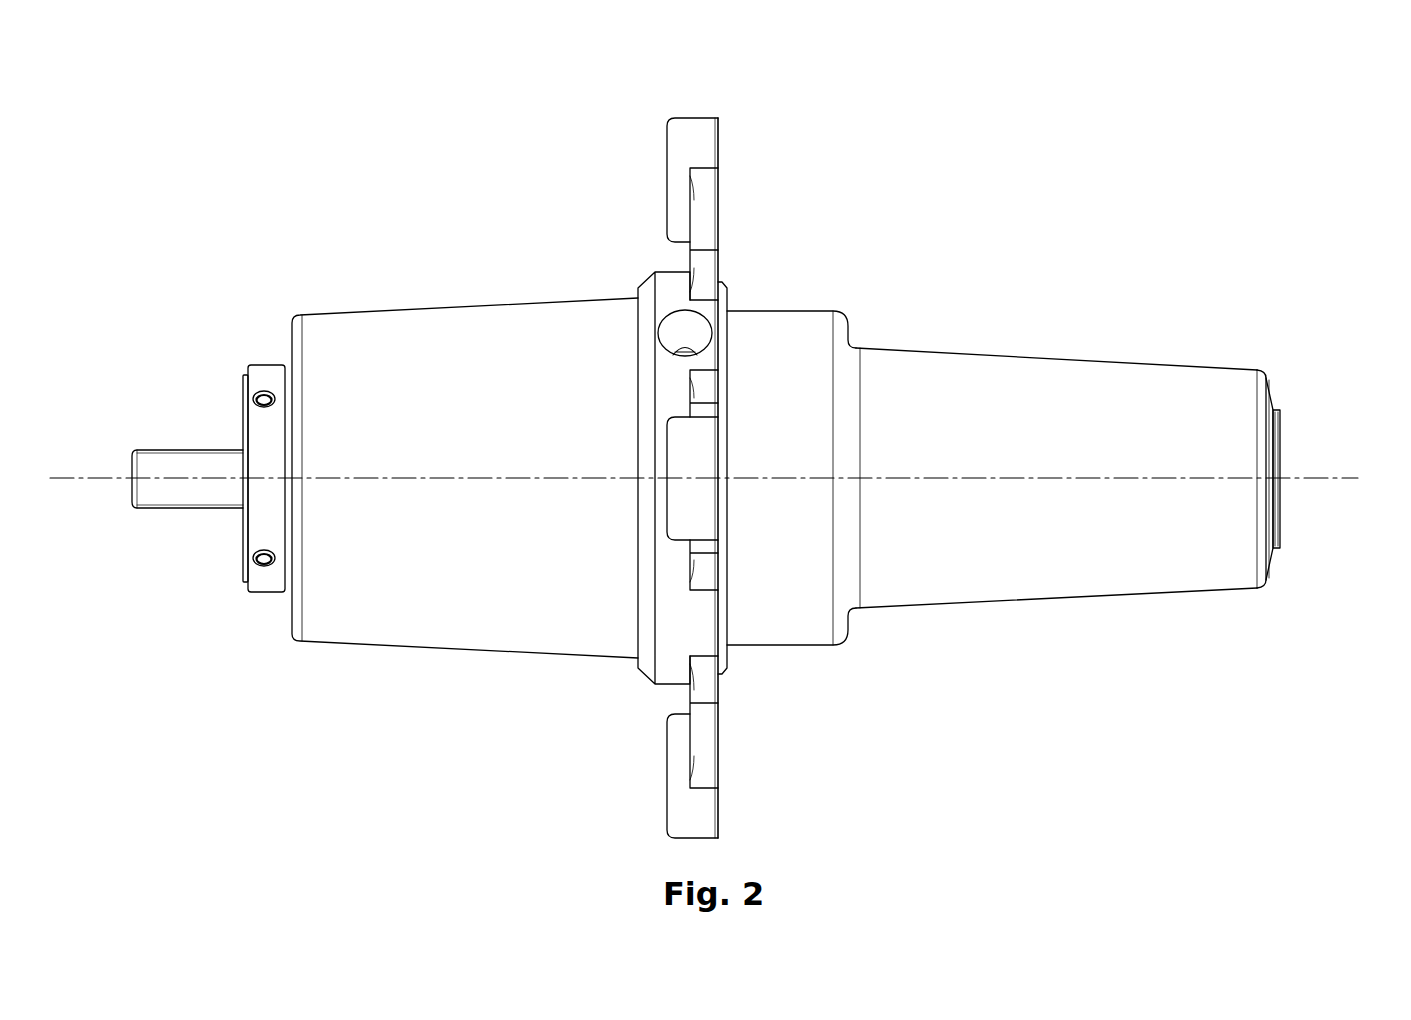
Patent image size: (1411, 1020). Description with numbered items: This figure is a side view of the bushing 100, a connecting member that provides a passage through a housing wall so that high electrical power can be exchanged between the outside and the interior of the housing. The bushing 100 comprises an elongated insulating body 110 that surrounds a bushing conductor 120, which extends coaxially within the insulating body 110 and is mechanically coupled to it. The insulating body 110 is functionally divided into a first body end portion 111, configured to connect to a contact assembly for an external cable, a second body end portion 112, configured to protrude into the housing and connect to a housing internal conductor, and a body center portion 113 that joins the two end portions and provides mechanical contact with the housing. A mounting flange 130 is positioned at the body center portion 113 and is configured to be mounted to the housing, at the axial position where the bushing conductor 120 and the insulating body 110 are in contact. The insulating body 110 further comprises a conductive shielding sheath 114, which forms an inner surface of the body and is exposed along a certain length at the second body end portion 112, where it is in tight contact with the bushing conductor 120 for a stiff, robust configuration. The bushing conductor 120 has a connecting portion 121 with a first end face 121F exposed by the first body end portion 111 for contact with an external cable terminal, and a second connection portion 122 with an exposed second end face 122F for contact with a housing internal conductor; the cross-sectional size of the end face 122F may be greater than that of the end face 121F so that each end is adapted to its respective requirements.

The bushing 100 is at (124, 86).
The insulating body 110 is at (1000, 308).
The first body end portion 111 is at (1150, 361).
The second body end portion 112 is at (445, 308).
The body center portion 113 is at (812, 98).
The metal sheath 114 is at (262, 371).
The bushing conductor 120 is at (195, 560).
The connecting portion 121 is at (1278, 98).
The first end face 121F is at (1282, 425).
The second connection portion 122 is at (420, 98).
The second end face 122F is at (238, 424).
The mounting flange 130 is at (638, 774).